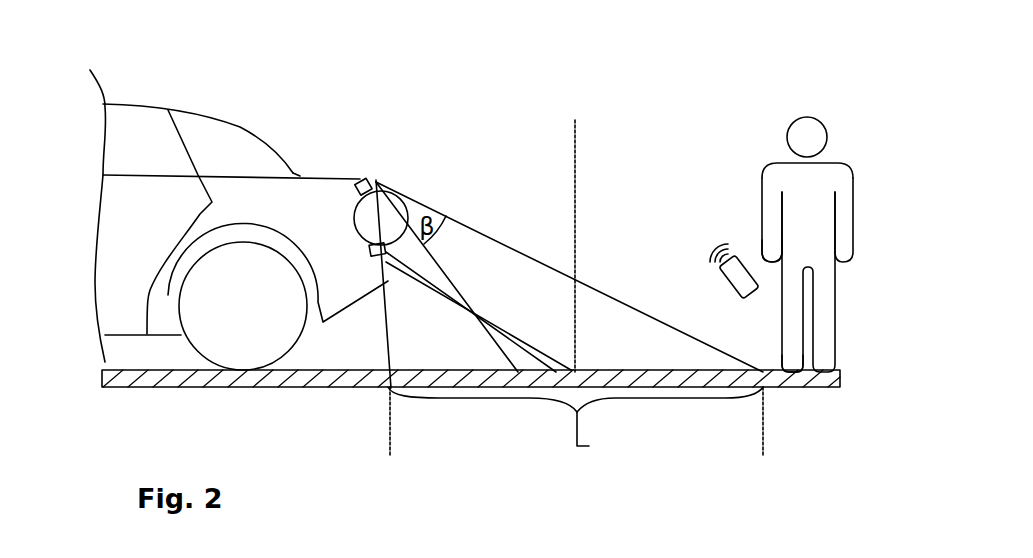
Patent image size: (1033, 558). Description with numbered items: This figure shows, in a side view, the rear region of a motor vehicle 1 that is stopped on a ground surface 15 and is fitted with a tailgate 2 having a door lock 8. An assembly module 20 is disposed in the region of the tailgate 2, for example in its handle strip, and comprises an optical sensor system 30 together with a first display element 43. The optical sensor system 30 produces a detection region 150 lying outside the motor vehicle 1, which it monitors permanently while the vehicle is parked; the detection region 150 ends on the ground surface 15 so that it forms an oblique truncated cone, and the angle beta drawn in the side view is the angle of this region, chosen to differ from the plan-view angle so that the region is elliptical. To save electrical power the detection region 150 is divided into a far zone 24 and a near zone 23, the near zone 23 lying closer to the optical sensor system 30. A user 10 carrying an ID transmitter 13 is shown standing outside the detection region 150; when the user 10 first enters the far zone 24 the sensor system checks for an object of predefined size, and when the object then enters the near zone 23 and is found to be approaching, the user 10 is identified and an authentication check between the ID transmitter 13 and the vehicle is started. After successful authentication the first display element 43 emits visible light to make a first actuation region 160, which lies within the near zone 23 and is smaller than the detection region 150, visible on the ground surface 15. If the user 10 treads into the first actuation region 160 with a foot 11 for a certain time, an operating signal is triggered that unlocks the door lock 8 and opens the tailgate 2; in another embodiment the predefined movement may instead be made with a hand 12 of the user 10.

The motor vehicle 1 is at (206, 103).
The tailgate 2 is at (324, 176).
The door lock 8 is at (380, 258).
The user 10 is at (798, 107).
The foot 11 is at (788, 368).
The hand 12 is at (771, 255).
The ID transmitter 13 is at (740, 286).
The ground surface 15 is at (797, 388).
The assembly module 20 is at (412, 105).
The near zone 23 is at (390, 455).
The far zone 24 is at (763, 455).
The optical sensor system 30 is at (372, 178).
The first display element 43 is at (392, 215).
The detection region 150 is at (605, 318).
The first actuation region 160 is at (570, 370).